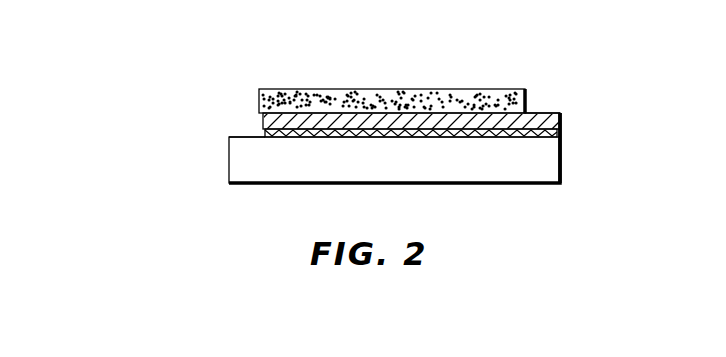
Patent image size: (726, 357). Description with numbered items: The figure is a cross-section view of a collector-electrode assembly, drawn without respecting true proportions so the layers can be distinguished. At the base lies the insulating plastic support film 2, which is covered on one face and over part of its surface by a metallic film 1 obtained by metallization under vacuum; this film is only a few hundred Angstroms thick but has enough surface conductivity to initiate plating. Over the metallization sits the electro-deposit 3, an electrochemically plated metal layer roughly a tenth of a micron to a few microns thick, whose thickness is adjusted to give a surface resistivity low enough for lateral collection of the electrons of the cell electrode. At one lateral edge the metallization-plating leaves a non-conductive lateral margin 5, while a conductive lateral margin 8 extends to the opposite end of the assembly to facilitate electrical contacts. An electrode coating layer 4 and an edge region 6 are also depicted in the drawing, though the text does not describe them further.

The metallic film 1 is at (318, 138).
The insulating plastic support film 2 is at (248, 160).
The electro-deposit 3 is at (436, 118).
The second electrode layer 4 is at (468, 88).
The non-conductive lateral margin 5 is at (244, 133).
The edge portion 6 is at (560, 125).
The conductive lateral margin 8 is at (540, 103).